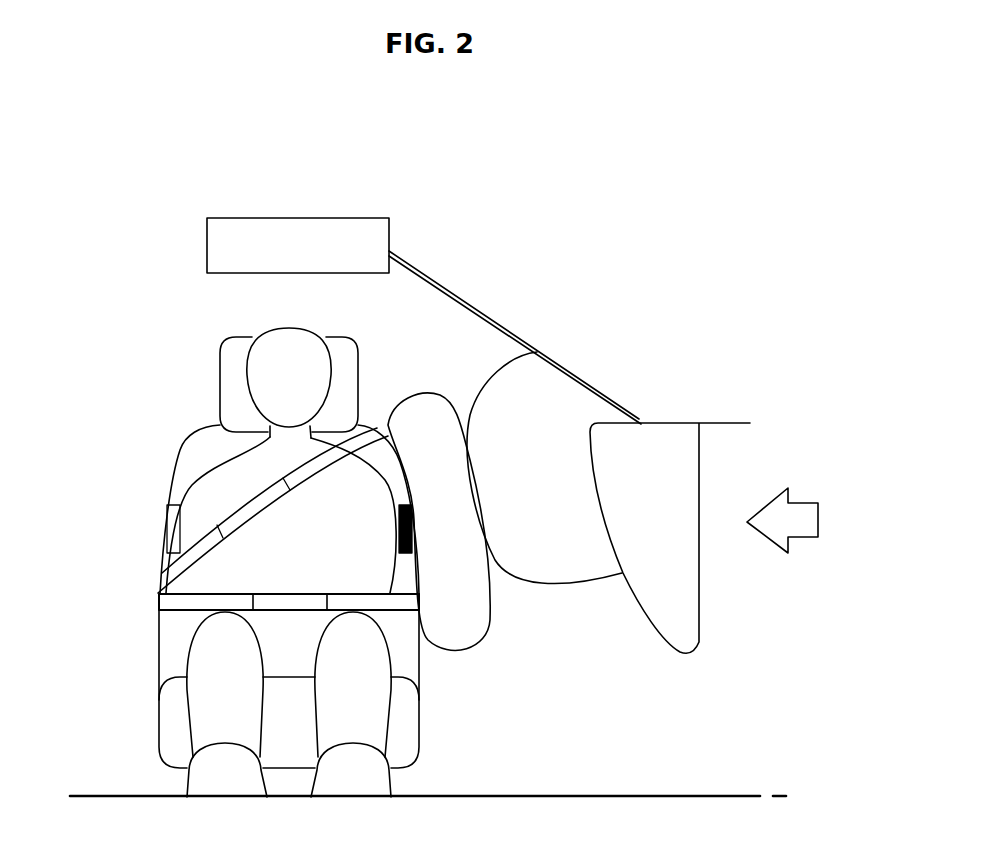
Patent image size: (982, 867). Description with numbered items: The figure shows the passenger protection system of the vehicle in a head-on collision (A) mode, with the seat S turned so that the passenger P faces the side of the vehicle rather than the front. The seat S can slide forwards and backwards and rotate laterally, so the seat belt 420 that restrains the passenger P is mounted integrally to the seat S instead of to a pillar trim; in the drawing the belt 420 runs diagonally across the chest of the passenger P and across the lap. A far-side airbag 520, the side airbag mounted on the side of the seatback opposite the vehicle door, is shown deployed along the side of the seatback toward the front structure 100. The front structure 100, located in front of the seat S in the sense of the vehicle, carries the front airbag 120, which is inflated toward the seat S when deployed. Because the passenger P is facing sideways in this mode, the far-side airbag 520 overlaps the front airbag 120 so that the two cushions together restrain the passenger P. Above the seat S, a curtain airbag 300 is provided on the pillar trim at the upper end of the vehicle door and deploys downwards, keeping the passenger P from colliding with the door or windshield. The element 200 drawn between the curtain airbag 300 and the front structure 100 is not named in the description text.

The front structure 100 is at (682, 463).
The front airbag 120 is at (557, 410).
The tether 200 is at (472, 302).
The curtain airbag 300 is at (375, 217).
The seat belt 420 is at (178, 607).
The far-side airbag 520 is at (475, 627).
The seat S is at (203, 437).
The passenger P is at (203, 493).
The head-on collision mode A is at (807, 540).